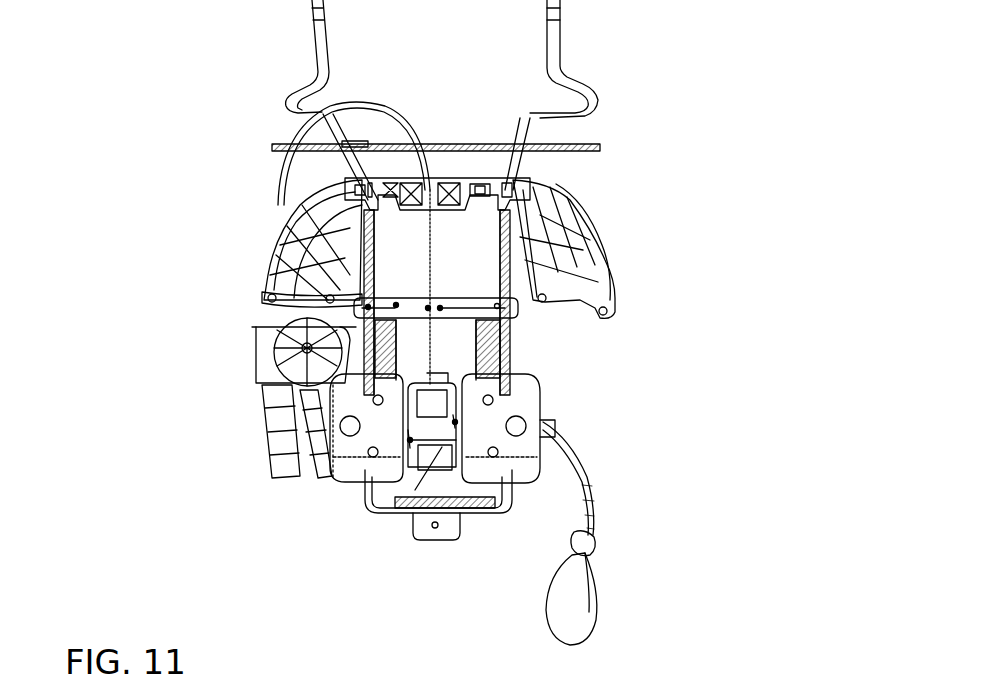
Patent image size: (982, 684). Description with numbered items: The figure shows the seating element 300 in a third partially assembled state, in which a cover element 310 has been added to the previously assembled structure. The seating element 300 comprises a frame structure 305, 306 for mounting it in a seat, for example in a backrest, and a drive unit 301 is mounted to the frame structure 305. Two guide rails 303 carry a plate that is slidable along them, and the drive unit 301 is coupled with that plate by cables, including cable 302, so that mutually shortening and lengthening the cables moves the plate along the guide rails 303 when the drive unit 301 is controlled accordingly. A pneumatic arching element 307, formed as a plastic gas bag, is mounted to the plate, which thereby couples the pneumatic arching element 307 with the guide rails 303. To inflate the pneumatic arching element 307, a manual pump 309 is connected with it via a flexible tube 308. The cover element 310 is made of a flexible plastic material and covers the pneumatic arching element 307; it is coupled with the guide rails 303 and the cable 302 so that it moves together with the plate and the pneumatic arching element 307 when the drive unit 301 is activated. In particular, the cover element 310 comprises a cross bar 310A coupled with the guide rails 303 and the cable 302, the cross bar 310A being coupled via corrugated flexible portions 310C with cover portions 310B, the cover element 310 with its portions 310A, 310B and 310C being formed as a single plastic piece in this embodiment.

The seating element 300 is at (240, 518).
The drive unit 301 is at (246, 421).
The cable 302 is at (431, 242).
The guide rails 303 is at (369, 249).
The frame structure 305 is at (588, 252).
The frame structure 306 is at (553, 65).
The pneumatic arching element 307 is at (455, 424).
The flexible tube 308 is at (593, 486).
The manual pump 309 is at (582, 598).
The cover element 310 is at (528, 381).
The cross bar 310A is at (396, 305).
The cover portions 310B is at (342, 466).
The corrugated flexible portions 310C is at (383, 332).